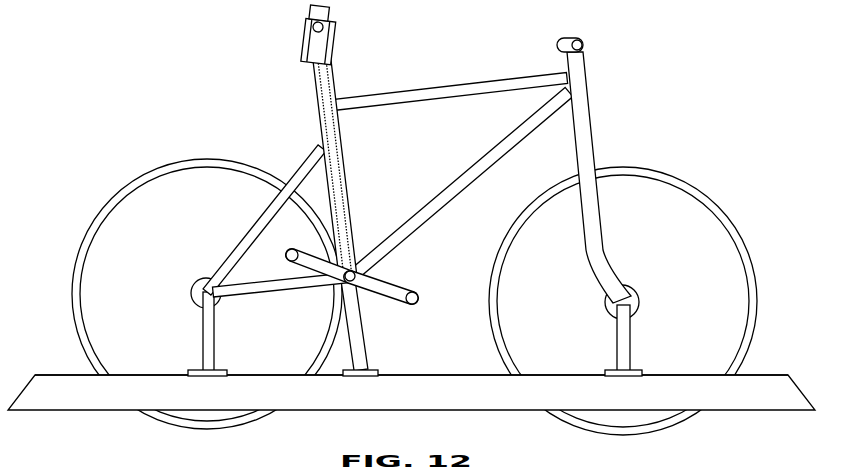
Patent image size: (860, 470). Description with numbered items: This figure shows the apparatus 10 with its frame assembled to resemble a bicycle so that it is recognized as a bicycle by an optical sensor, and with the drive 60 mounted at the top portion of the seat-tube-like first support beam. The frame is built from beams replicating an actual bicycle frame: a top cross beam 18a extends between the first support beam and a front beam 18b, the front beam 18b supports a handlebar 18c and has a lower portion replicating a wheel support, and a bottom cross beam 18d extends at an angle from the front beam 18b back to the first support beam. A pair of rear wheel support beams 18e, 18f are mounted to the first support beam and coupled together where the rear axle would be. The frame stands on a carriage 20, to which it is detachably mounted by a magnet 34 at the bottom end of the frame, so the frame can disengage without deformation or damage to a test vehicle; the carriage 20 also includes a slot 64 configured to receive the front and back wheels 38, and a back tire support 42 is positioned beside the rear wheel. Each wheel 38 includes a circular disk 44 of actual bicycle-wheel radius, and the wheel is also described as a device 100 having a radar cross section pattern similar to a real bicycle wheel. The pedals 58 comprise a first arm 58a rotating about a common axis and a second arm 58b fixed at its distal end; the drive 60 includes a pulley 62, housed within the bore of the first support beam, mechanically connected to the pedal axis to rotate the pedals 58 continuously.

The apparatus 10 is at (416, 235).
The top cross beam 18a is at (543, 77).
The front beam 18b is at (580, 122).
The handlebar 18c is at (584, 44).
The bottom cross beam 18d is at (487, 168).
The rear wheel support beam 18e is at (270, 212).
The rear wheel support beam 18f is at (245, 289).
The carriage 20 is at (411, 394).
The magnet 34 is at (195, 371).
The wheel 38 is at (657, 301).
The device 100 is at (657, 301).
The back tire support 42 is at (205, 311).
The disk 44 is at (735, 303).
The pedals 58 is at (385, 298).
The first arm 58a is at (397, 305).
The second arm 58b is at (422, 297).
The drive 60 is at (345, 42).
The pulley 62 is at (337, 76).
The slot 64 is at (235, 382).